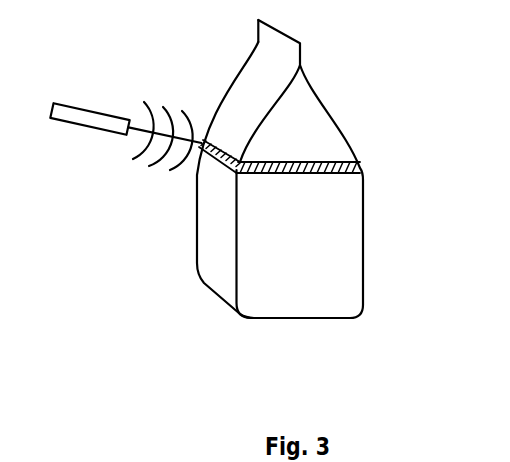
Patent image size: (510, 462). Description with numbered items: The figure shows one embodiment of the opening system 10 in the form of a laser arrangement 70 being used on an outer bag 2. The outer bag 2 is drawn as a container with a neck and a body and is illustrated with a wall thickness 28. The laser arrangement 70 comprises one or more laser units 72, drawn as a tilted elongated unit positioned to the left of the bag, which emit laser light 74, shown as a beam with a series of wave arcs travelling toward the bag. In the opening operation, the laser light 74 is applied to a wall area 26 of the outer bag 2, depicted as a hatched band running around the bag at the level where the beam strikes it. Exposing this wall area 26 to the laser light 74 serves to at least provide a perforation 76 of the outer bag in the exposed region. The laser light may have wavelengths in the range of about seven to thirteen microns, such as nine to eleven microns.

The outer bag 2 is at (321, 169).
The wall thickness 28 is at (343, 120).
The opening system 10 is at (122, 84).
The laser arrangement 70 is at (122, 84).
The laser unit 72 is at (92, 105).
The laser light 74 is at (167, 178).
The wall area 26 is at (333, 174).
The perforation 76 is at (362, 172).